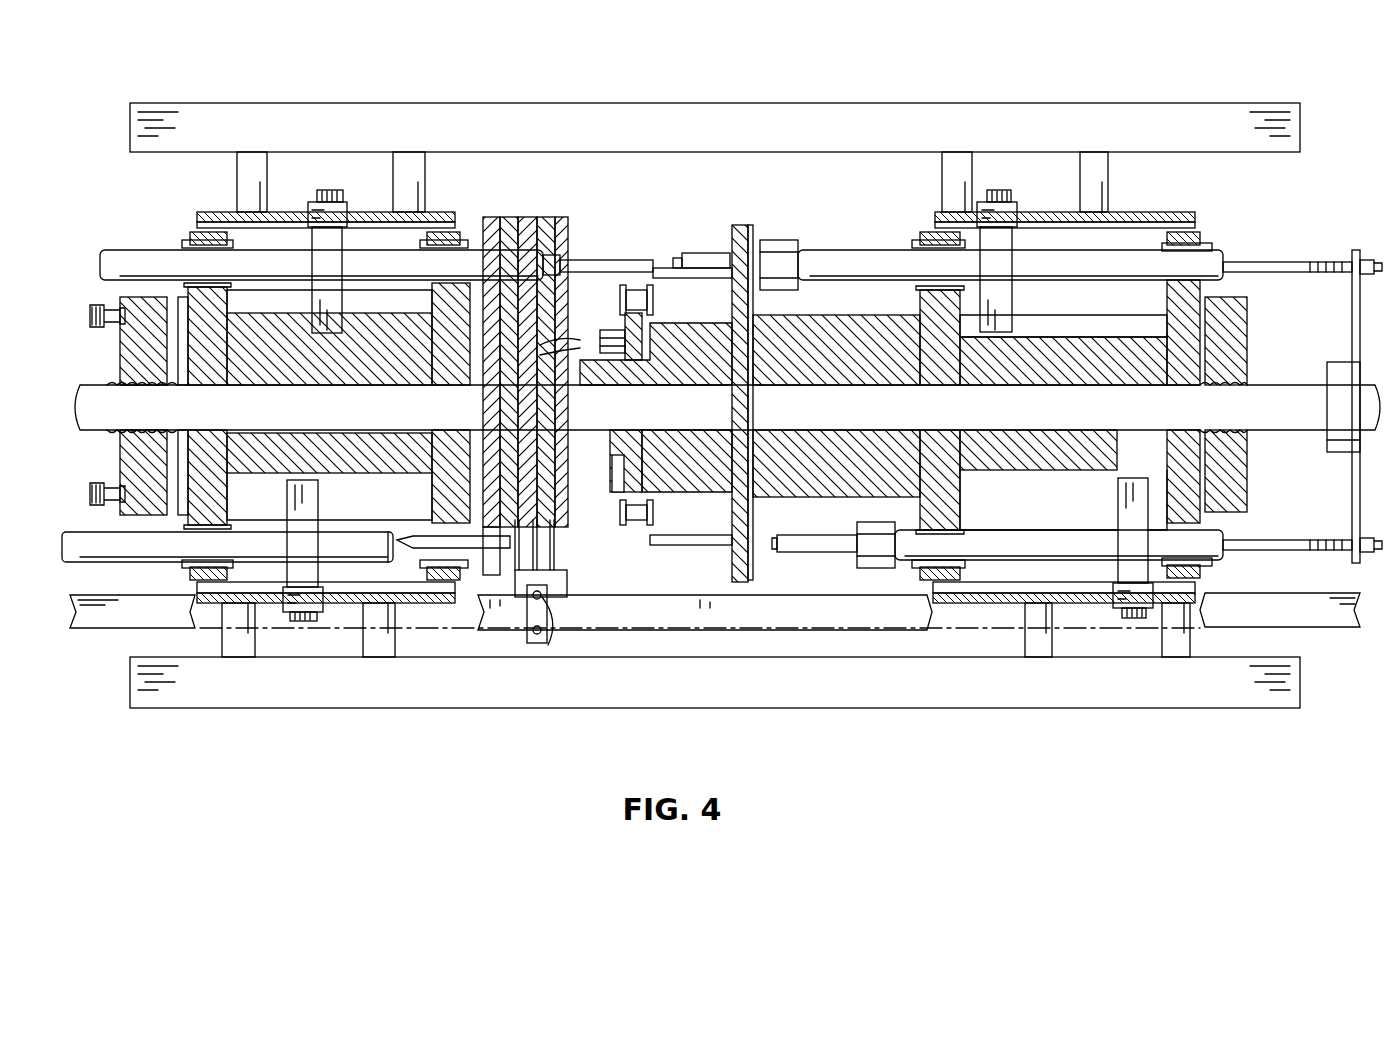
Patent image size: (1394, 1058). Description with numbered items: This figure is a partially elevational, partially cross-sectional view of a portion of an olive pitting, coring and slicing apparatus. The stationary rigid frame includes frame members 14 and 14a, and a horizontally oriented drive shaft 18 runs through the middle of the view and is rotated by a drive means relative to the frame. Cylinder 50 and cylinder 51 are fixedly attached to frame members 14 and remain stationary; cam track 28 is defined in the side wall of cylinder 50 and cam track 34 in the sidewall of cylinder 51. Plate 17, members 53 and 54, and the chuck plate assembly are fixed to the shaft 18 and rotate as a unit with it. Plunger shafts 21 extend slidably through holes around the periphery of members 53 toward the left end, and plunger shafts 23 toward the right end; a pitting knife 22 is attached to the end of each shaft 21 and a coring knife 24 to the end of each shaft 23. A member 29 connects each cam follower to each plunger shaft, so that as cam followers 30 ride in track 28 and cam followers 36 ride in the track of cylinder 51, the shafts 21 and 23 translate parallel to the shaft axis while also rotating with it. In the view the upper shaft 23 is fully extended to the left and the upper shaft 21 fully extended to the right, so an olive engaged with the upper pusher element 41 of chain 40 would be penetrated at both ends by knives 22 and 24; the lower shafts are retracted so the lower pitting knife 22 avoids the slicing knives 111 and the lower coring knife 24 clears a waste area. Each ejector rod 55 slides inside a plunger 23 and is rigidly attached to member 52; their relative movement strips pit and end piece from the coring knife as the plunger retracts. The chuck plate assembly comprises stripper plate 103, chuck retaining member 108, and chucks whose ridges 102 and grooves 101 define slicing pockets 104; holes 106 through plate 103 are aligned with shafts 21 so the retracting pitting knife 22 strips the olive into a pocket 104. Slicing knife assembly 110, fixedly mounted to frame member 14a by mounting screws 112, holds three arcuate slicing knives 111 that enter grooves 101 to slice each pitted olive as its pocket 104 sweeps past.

The rigid frame member 14 is at (246, 160).
The rigid frame member 14a is at (148, 622).
The plate 17 is at (740, 225).
The drive shaft 18 is at (1268, 385).
The plunger shaft 21 is at (150, 250).
The pitting knife 22 is at (590, 260).
The plunger shaft 23 is at (1130, 245).
The coring knife 24 is at (700, 255).
The cam track 28 is at (345, 212).
The member 29 is at (335, 297).
The cam follower 30 is at (305, 210).
The cam track 34 is at (1018, 210).
The cam follower 36 is at (980, 205).
The chain 40 is at (634, 292).
The pusher element 41 is at (670, 280).
The cylinder 50 is at (205, 212).
The cylinder 51 is at (1190, 215).
The member 52 is at (1352, 315).
The member 53 is at (440, 210).
The member 54 is at (270, 340).
The ejector rod 55 is at (1280, 262).
The groove 101 is at (500, 265).
The ridge 102 is at (580, 340).
The stripper plate 103 is at (508, 240).
The slicing pocket 104 is at (580, 245).
The hole 106 is at (482, 230).
The chuck retaining member 108 is at (585, 495).
The slicing knife assembly 110 is at (535, 650).
The slicing knife 111 is at (575, 560).
The mounting screw 112 is at (550, 645).